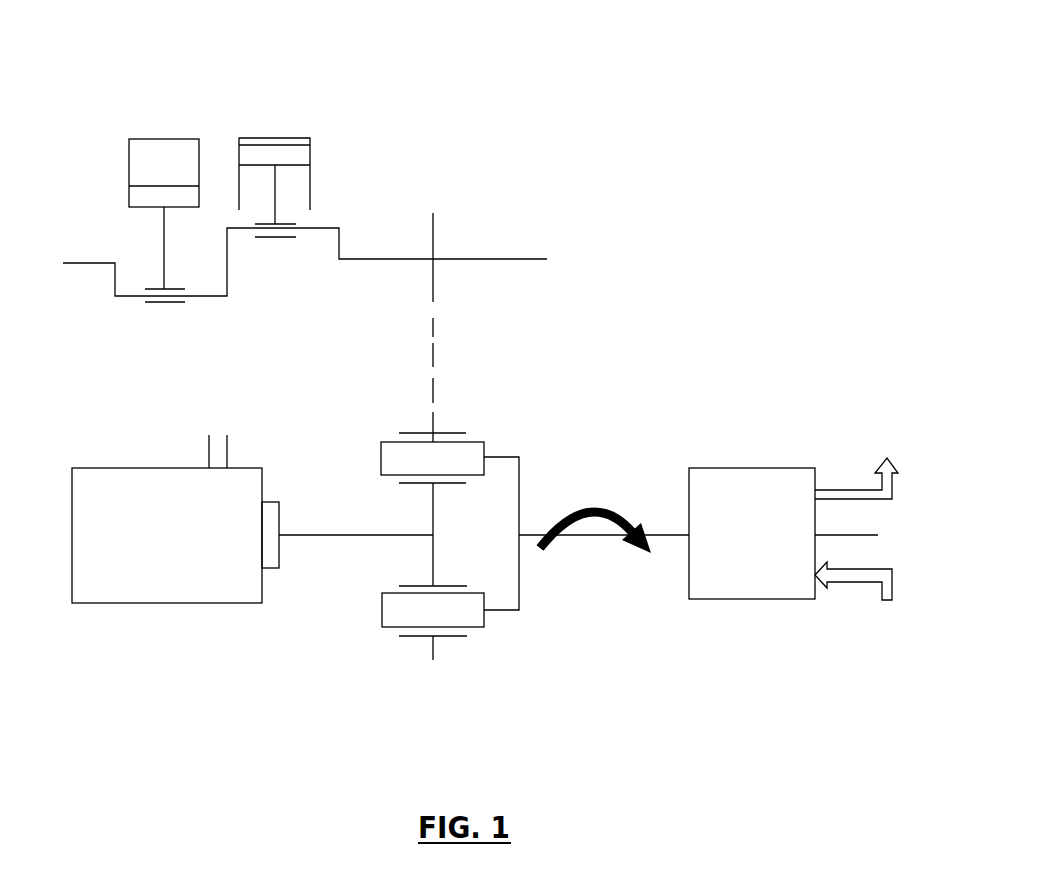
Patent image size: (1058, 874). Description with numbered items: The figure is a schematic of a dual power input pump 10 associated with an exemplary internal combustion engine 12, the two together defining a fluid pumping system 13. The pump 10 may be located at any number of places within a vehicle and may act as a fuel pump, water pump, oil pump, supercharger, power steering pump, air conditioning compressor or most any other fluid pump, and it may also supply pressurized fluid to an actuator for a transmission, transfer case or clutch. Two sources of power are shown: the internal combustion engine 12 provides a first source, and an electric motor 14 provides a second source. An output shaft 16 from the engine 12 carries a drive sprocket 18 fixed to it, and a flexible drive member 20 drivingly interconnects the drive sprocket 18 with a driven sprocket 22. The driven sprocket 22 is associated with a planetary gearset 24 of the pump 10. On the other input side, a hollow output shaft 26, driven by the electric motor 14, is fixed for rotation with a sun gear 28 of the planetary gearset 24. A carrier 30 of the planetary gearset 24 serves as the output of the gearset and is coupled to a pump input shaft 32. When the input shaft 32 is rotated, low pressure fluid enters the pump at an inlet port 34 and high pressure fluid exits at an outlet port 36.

The dual power input pump 10 is at (609, 376).
The internal combustion engine 12 is at (284, 114).
The fluid pumping system 13 is at (616, 68).
The electric motor 14 is at (140, 592).
The output shaft 16 is at (368, 259).
The drive sprocket 18 is at (433, 228).
The flexible drive member 20 is at (433, 327).
The driven sprocket 22 is at (433, 651).
The planetary gearset 24 is at (459, 572).
The hollow output shaft 26 is at (320, 535).
The sun gear 28 is at (412, 586).
The carrier 30 is at (519, 575).
The pump input shaft 32 is at (677, 533).
The inlet port 34 is at (851, 582).
The outlet port 36 is at (836, 490).